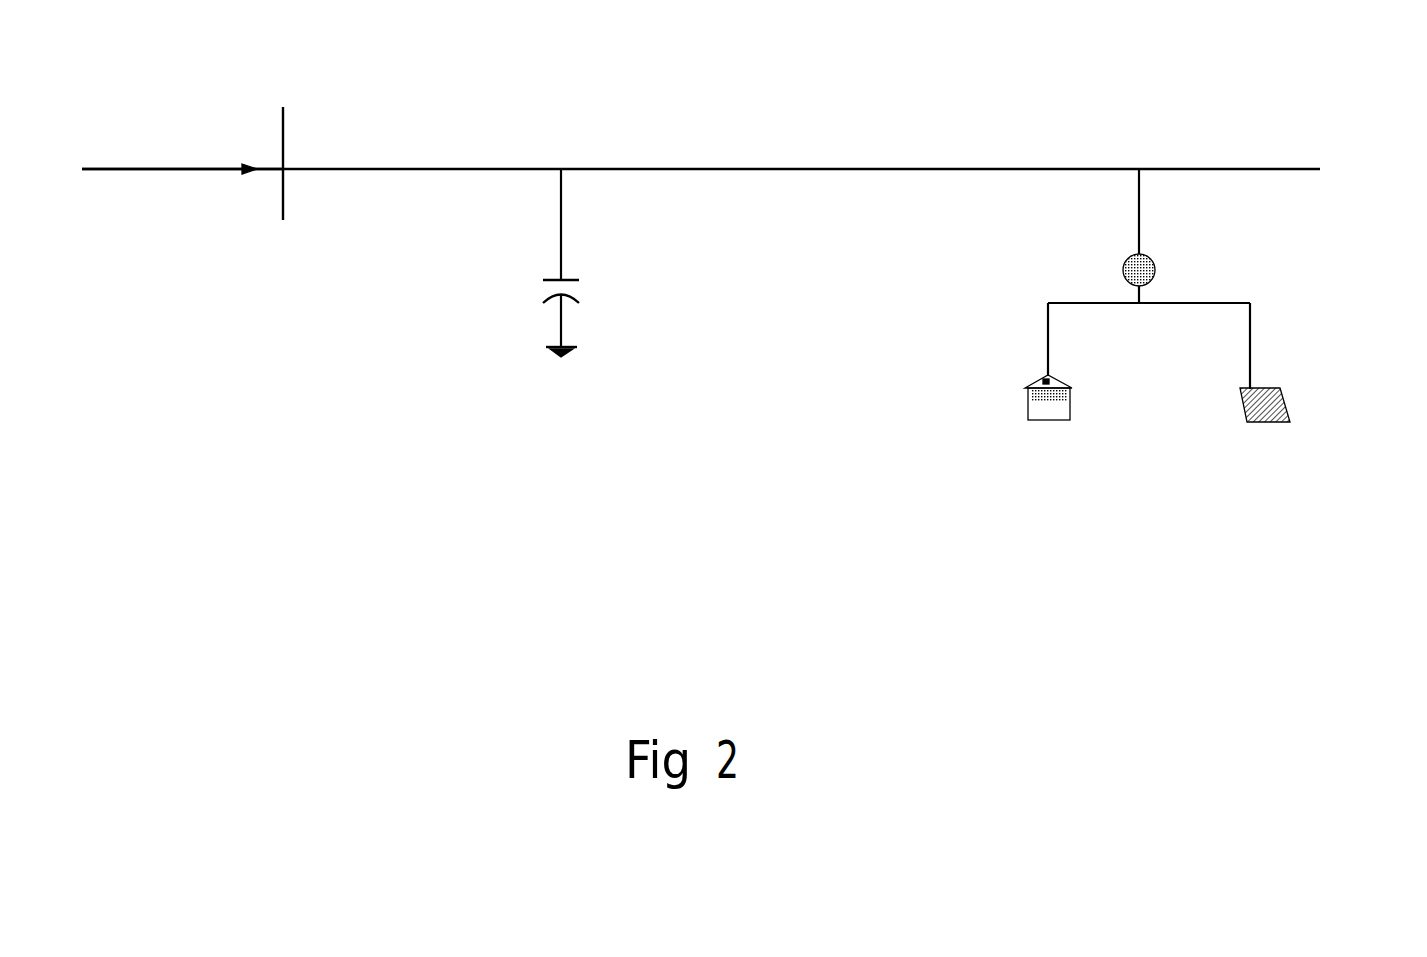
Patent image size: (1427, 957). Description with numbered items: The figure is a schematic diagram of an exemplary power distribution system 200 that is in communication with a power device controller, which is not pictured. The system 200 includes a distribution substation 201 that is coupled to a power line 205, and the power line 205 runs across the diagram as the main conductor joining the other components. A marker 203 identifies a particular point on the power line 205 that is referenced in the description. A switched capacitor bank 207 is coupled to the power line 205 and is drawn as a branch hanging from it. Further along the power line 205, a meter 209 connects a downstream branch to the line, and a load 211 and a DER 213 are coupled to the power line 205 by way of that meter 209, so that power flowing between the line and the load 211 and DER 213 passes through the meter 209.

The power distribution system 200 is at (362, 547).
The distribution substation 201 is at (150, 170).
The marker 203 is at (283, 186).
The power line 205 is at (500, 168).
The switched capacitor bank 207 is at (562, 213).
The meter 209 is at (1147, 253).
The load 211 is at (1043, 422).
The DER 213 is at (1262, 422).